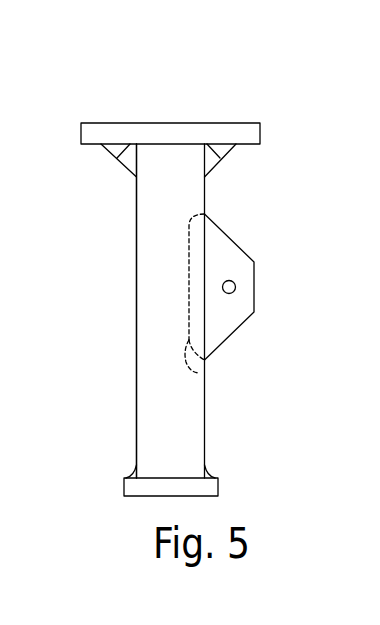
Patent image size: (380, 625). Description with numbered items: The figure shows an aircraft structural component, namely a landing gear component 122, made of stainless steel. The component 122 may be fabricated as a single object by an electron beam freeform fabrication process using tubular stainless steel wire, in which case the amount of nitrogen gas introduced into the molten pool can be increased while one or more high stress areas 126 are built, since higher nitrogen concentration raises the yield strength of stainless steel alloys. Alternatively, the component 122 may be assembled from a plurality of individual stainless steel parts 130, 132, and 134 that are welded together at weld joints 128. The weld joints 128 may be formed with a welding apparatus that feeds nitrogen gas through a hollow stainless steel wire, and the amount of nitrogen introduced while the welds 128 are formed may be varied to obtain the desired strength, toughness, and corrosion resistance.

The landing gear component 122 is at (207, 412).
The high stress area 126 is at (200, 373).
The weld joints 128 is at (117, 158).
The individual stainless steel part 130 is at (108, 122).
The individual stainless steel part 132 is at (136, 304).
The individual stainless steel part 134 is at (143, 497).